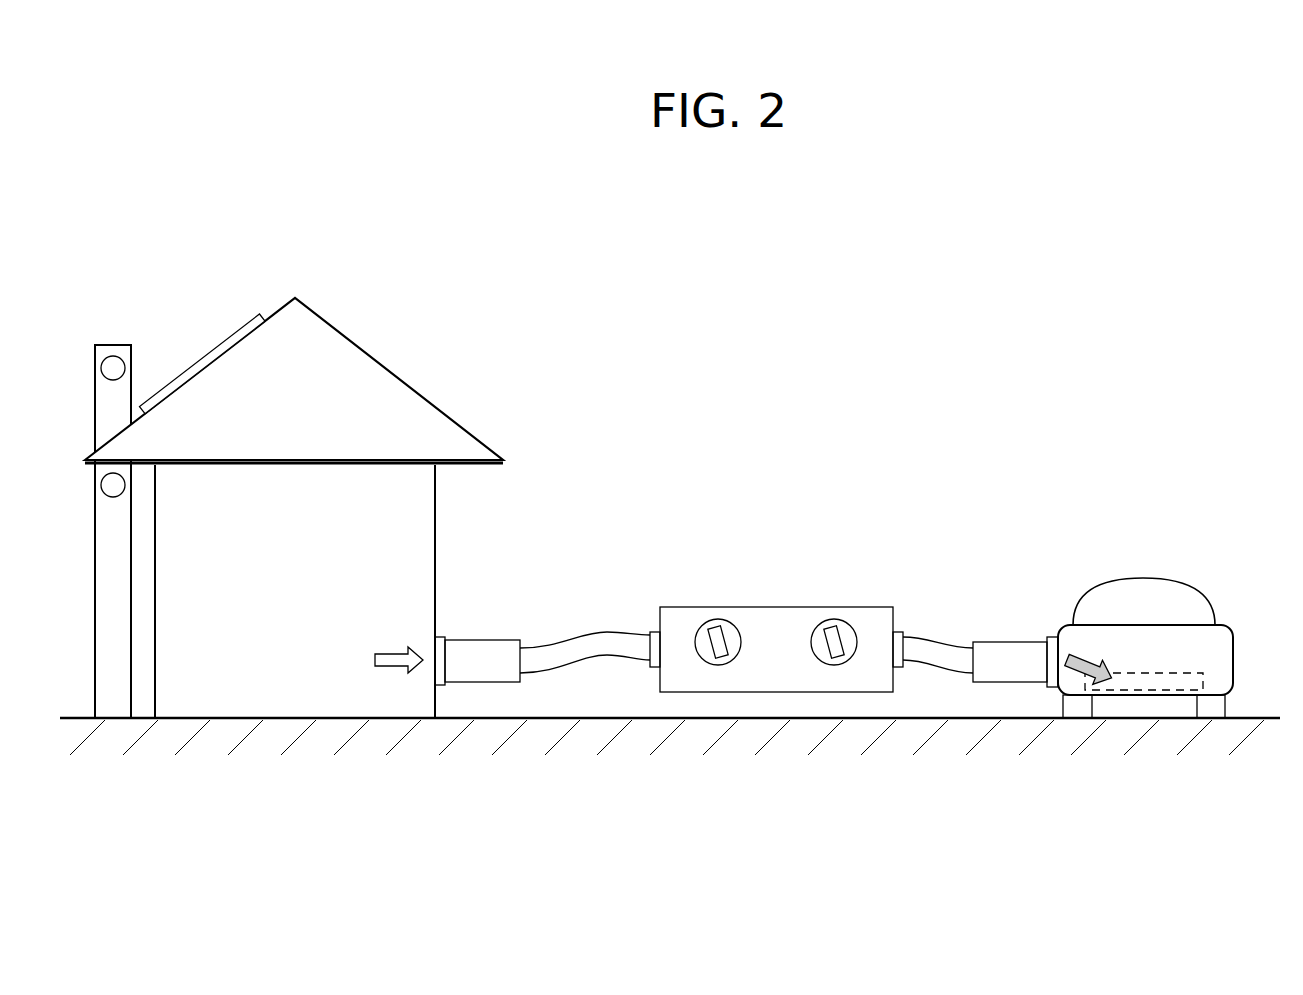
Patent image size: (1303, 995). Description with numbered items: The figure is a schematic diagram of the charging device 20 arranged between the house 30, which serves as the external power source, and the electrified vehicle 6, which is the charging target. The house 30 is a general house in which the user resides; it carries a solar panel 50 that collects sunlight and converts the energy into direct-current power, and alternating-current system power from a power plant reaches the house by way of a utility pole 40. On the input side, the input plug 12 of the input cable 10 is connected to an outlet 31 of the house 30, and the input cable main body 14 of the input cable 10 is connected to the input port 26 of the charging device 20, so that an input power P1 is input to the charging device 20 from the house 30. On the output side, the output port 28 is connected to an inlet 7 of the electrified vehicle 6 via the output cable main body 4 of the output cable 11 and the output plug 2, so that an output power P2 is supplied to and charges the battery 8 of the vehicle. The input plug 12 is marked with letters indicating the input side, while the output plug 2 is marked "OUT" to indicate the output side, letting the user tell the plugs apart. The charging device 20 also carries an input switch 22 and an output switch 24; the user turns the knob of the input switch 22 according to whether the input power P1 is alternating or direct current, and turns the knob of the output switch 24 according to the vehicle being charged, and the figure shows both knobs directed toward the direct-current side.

The output plug 2 is at (1007, 645).
The output cable main body 4 is at (930, 652).
The electrified vehicle 6 is at (1137, 592).
The inlet 7 is at (1052, 637).
The battery 8 is at (1163, 692).
The input cable 10 is at (540, 610).
The output cable 11 is at (975, 610).
The input plug 12 is at (488, 640).
The input cable main body 14 is at (605, 645).
The charging device 20 is at (765, 622).
The input switch 22 is at (716, 619).
The output switch 24 is at (838, 619).
The input port 26 is at (655, 632).
The output port 28 is at (897, 632).
The house 30 is at (404, 328).
The outlet 31 is at (440, 637).
The utility pole 40 is at (112, 328).
The solar panel 50 is at (200, 360).
The input power P1 is at (388, 672).
The output power P2 is at (1075, 675).